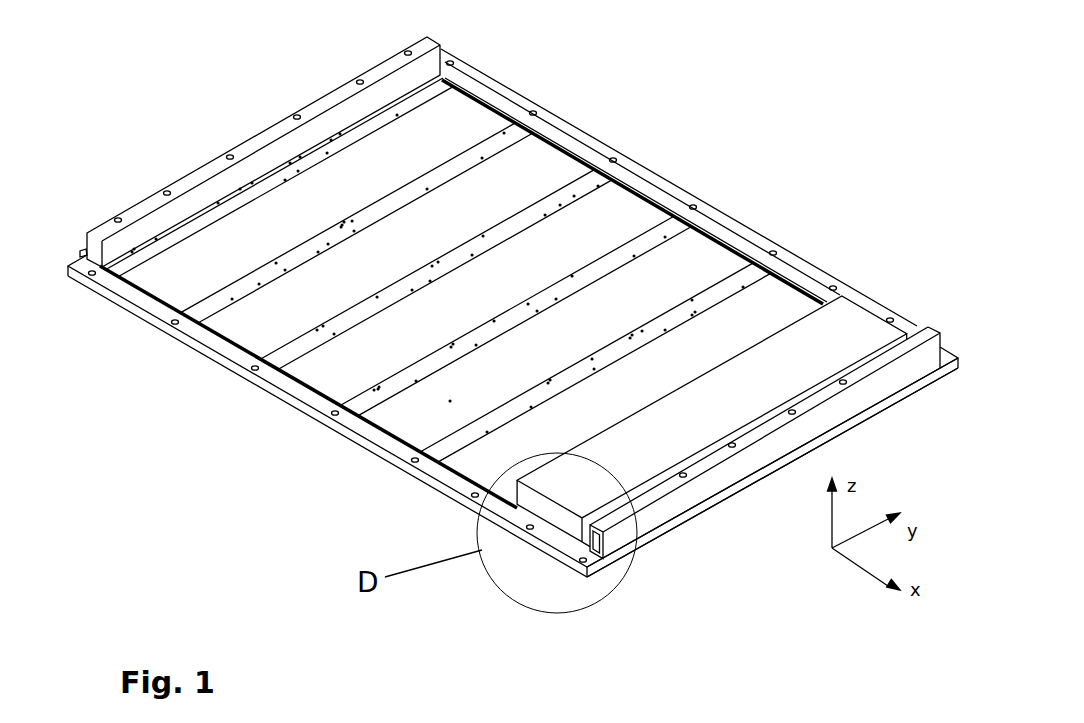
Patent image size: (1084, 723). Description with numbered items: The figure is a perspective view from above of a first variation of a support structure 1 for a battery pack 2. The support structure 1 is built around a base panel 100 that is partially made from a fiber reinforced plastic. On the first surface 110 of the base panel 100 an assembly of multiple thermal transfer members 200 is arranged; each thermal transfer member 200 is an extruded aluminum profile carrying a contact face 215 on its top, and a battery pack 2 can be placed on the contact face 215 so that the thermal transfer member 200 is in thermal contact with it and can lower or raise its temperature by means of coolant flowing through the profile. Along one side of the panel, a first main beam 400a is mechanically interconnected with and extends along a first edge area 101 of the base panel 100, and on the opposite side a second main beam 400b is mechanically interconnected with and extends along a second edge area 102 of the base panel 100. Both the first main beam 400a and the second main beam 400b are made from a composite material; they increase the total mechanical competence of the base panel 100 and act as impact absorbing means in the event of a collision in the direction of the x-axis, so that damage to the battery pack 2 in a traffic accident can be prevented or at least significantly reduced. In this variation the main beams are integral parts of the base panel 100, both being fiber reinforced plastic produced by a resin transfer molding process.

The support structure 1 is at (122, 58).
The battery pack 2 is at (855, 337).
The base panel 100 is at (215, 358).
The first edge area 101 is at (690, 512).
The second edge area 102 is at (82, 256).
The first surface 110 is at (458, 440).
The thermal transfer member 200 is at (463, 126).
The contact face 215 is at (450, 401).
The first main beam 400a is at (600, 537).
The second main beam 400b is at (265, 141).